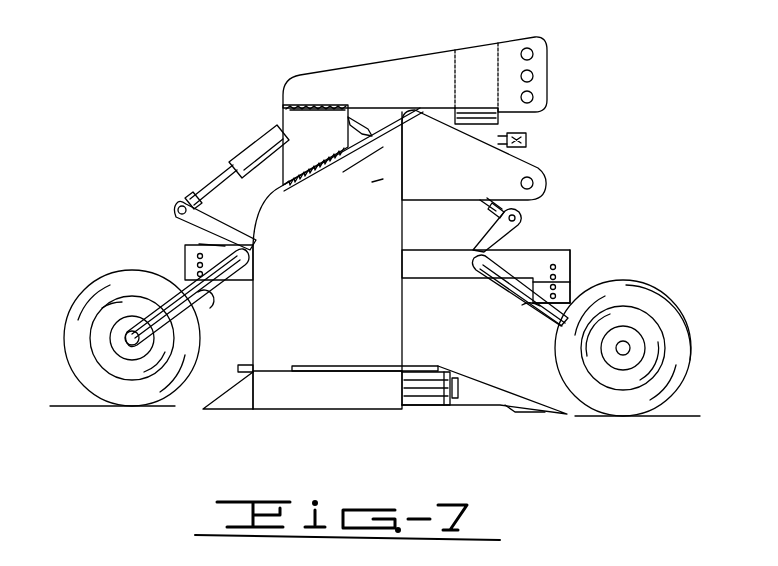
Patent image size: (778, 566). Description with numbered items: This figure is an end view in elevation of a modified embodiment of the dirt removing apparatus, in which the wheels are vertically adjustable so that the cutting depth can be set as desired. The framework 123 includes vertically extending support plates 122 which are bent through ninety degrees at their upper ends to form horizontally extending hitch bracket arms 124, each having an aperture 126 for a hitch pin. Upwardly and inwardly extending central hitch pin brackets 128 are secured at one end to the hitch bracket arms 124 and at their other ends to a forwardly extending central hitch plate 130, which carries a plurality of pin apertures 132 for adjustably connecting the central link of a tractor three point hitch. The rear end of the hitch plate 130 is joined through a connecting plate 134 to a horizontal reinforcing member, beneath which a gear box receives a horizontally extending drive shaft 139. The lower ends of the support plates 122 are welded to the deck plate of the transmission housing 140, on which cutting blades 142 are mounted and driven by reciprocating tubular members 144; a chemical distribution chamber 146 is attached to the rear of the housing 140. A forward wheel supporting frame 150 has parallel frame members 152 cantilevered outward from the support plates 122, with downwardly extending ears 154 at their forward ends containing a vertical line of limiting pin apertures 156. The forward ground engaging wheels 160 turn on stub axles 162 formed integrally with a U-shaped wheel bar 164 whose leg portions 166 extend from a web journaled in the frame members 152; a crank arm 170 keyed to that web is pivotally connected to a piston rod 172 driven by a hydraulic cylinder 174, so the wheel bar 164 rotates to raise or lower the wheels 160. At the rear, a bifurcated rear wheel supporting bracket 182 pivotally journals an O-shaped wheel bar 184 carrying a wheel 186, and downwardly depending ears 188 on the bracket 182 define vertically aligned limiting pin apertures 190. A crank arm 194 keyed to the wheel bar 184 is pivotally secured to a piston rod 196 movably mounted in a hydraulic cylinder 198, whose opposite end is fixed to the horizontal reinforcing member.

The support plates 122 is at (338, 278).
The framework 123 is at (402, 331).
The hitch bracket arms 124 is at (459, 162).
The aperture 126 is at (532, 181).
The central hitch pin brackets 128 is at (494, 76).
The central hitch plate 130 is at (428, 86).
The pin apertures 132 is at (532, 53).
The connecting plate 134 is at (322, 141).
The drive shaft 139 is at (526, 139).
The transmission housing 140 is at (293, 410).
The cutting blades 142 is at (466, 408).
The reciprocating tubular members 144 is at (408, 404).
The chemical distribution chamber 146 is at (238, 408).
The forward wheel supporting frame 150 is at (572, 245).
The frame members 152 is at (435, 263).
The downwardly extending ears 154 is at (568, 290).
The limiting pin apertures 156 is at (553, 262).
The forward ground engaging wheels 160 is at (655, 302).
The stub axles 162 is at (632, 346).
The U-shaped wheel bar 164 is at (510, 304).
The leg portions 166 is at (536, 300).
The crank arm 170 is at (500, 235).
The piston rod 172 is at (494, 201).
The hydraulic cylinder 174 is at (360, 126).
The rear wheel supporting bracket 182 is at (203, 244).
The O-shaped wheel bar 184 is at (172, 326).
The wheel 186 is at (66, 341).
The downwardly depending ears 188 is at (200, 308).
The limiting pin apertures 190 is at (187, 272).
The crank arm 194 is at (200, 228).
The piston rod 196 is at (222, 179).
The hydraulic cylinder 198 is at (258, 142).